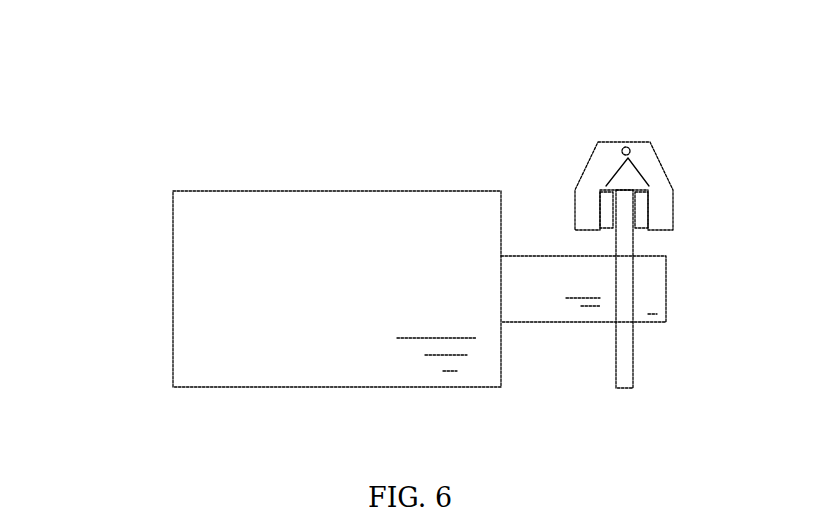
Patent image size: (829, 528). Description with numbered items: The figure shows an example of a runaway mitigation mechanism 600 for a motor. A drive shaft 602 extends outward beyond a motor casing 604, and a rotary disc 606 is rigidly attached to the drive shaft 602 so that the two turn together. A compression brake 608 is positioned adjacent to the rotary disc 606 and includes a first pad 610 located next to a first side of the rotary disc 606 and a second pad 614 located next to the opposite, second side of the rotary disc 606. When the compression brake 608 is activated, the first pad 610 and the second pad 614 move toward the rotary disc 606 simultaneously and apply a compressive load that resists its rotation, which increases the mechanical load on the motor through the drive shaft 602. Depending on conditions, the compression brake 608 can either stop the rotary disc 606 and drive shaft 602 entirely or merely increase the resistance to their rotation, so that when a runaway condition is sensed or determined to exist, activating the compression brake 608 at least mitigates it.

The runaway mitigation mechanism 600 is at (89, 114).
The drive shaft 602 is at (534, 281).
The motor casing 604 is at (328, 215).
The rotary disc 606 is at (634, 371).
The compression brake 608 is at (505, 158).
The first pad 610 is at (608, 210).
The second pad 614 is at (645, 207).